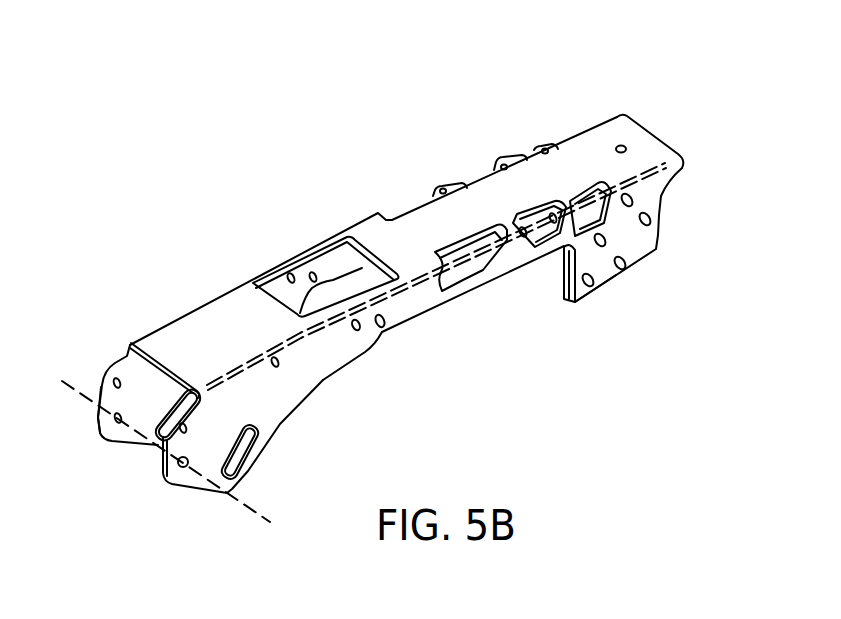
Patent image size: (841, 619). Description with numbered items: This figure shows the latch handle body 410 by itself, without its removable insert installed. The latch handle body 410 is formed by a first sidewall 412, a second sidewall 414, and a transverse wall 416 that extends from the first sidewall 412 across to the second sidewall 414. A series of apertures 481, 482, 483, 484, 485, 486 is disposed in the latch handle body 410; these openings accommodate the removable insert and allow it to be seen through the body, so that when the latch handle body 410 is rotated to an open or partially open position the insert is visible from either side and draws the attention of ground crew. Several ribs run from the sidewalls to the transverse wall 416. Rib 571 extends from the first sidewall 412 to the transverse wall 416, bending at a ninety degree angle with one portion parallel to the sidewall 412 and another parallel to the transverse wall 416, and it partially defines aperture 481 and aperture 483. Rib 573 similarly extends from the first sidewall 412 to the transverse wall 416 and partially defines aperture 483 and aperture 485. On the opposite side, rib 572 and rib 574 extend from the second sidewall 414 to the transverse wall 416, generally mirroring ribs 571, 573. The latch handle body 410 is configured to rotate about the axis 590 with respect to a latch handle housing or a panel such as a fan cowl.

The latch handle body 410 is at (334, 108).
The first sidewall 412 is at (362, 268).
The second sidewall 414 is at (325, 382).
The transverse wall 416 is at (257, 334).
The aperture 481 is at (418, 199).
The aperture 482 is at (466, 282).
The aperture 483 is at (484, 176).
The aperture 484 is at (530, 235).
The aperture 485 is at (540, 152).
The aperture 486 is at (600, 248).
The rib 571 is at (457, 186).
The rib 572 is at (513, 225).
The rib 573 is at (516, 158).
The rib 574 is at (572, 207).
The axis 590 is at (259, 513).